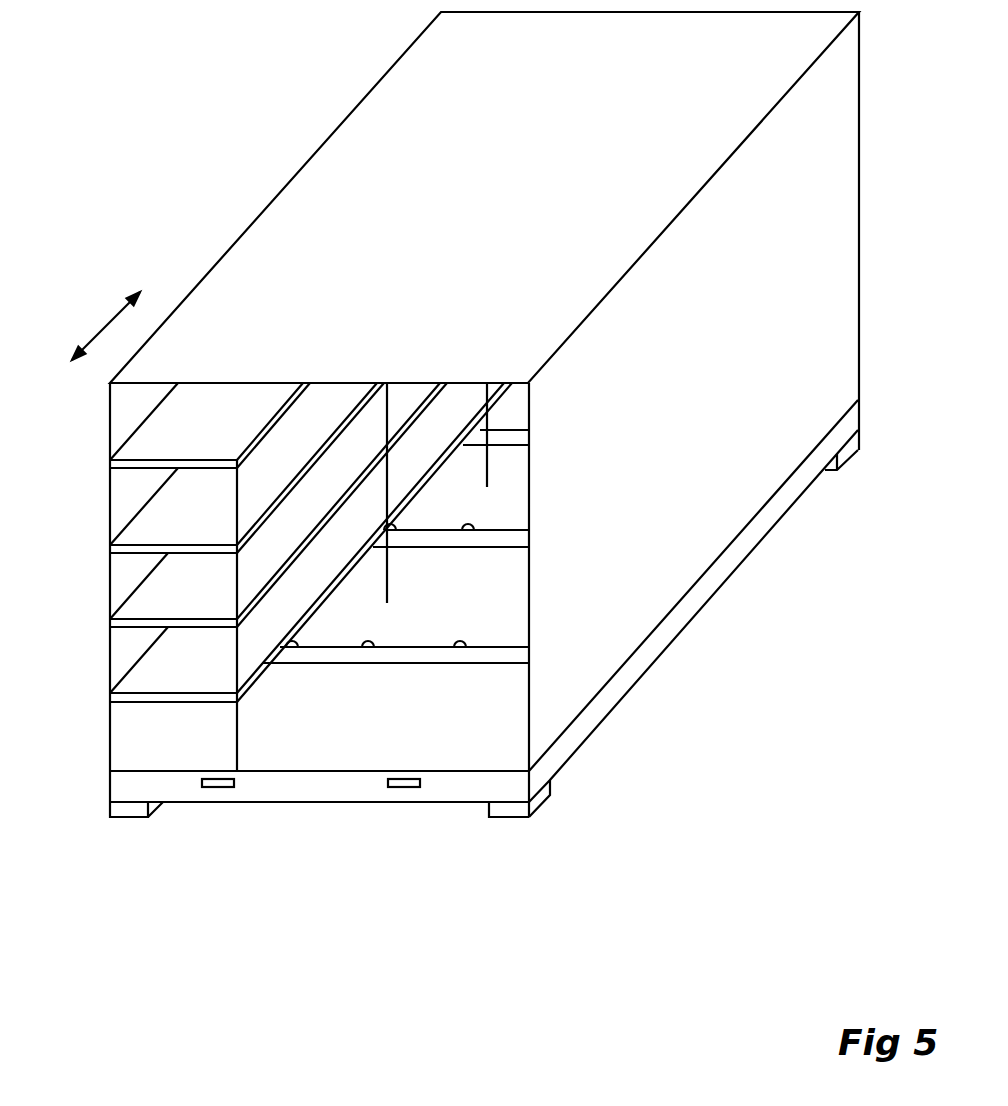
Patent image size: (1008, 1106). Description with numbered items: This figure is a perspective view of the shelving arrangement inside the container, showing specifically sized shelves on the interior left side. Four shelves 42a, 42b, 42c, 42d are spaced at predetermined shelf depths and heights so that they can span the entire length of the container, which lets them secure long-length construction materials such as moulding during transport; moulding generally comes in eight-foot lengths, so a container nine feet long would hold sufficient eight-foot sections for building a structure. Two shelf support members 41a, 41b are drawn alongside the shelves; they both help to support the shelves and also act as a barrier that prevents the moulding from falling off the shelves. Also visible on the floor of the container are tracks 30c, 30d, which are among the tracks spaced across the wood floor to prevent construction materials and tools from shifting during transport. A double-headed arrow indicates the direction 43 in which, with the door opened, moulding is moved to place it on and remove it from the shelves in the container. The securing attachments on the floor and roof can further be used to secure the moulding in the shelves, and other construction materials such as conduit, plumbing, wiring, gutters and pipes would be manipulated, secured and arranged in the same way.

The direction 43 is at (107, 322).
The shelf 42a is at (143, 445).
The shelf 42b is at (143, 530).
The shelf 42c is at (143, 608).
The shelf 42d is at (145, 672).
The shelf support member 41a is at (390, 413).
The shelf support member 41b is at (508, 383).
The track 30c is at (440, 540).
The track 30d is at (408, 655).